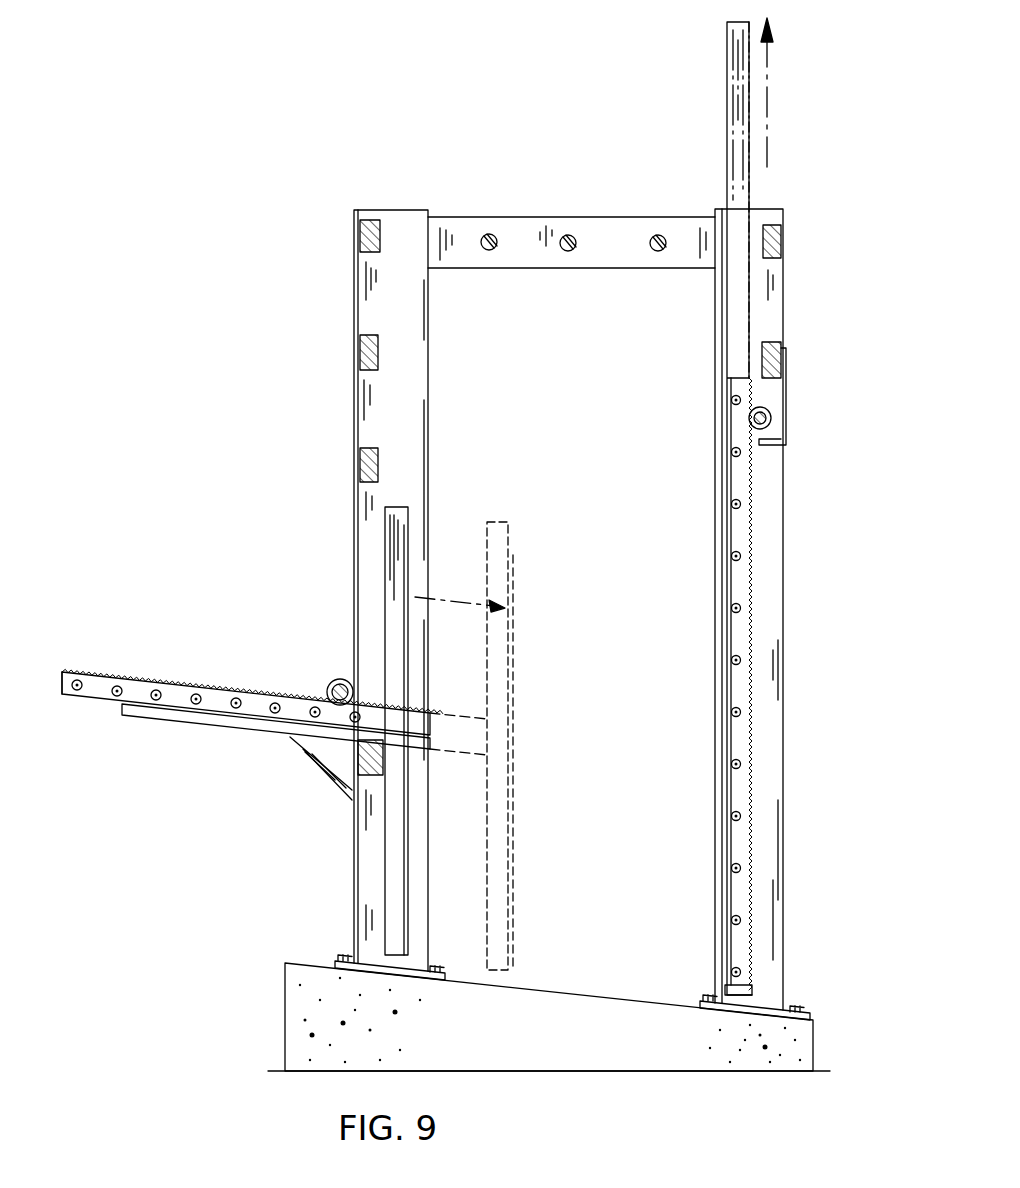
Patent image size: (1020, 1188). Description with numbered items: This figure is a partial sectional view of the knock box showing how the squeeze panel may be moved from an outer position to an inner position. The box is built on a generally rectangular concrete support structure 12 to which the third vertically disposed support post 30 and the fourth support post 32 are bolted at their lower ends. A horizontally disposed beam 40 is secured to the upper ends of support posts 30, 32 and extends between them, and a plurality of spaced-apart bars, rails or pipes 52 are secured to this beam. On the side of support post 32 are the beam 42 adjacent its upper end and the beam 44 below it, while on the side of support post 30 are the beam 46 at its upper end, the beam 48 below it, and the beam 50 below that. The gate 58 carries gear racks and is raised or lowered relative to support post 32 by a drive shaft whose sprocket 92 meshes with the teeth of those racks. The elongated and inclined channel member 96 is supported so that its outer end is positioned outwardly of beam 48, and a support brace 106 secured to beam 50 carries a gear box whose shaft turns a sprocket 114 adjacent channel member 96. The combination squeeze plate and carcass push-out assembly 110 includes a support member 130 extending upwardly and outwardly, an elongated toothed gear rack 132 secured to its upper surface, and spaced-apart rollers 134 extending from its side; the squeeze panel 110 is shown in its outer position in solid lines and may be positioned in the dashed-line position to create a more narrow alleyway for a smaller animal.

The support structure 12 is at (255, 1015).
The third vertically disposed support post 30 is at (412, 422).
The fourth support post 32 is at (768, 468).
The horizontally disposed beam 40 is at (627, 217).
The horizontally disposed beam 42 is at (778, 238).
The horizontally disposed beam 44 is at (778, 360).
The horizontally disposed beam 46 is at (358, 237).
The horizontally disposed beam 48 is at (360, 353).
The horizontally disposed beam 50 is at (360, 466).
The horizontally disposed bars 52 is at (562, 237).
The gate 58 is at (754, 535).
The sprocket 92 is at (772, 415).
The inclined channel member 96 is at (243, 722).
The support brace 106 is at (312, 752).
The combination squeeze plate and carcass push-out assembly 110 is at (411, 528).
The sprocket 114 is at (333, 680).
The support member 130 is at (98, 702).
The toothed gear rack 132 is at (222, 688).
The rollers 134 is at (80, 668).